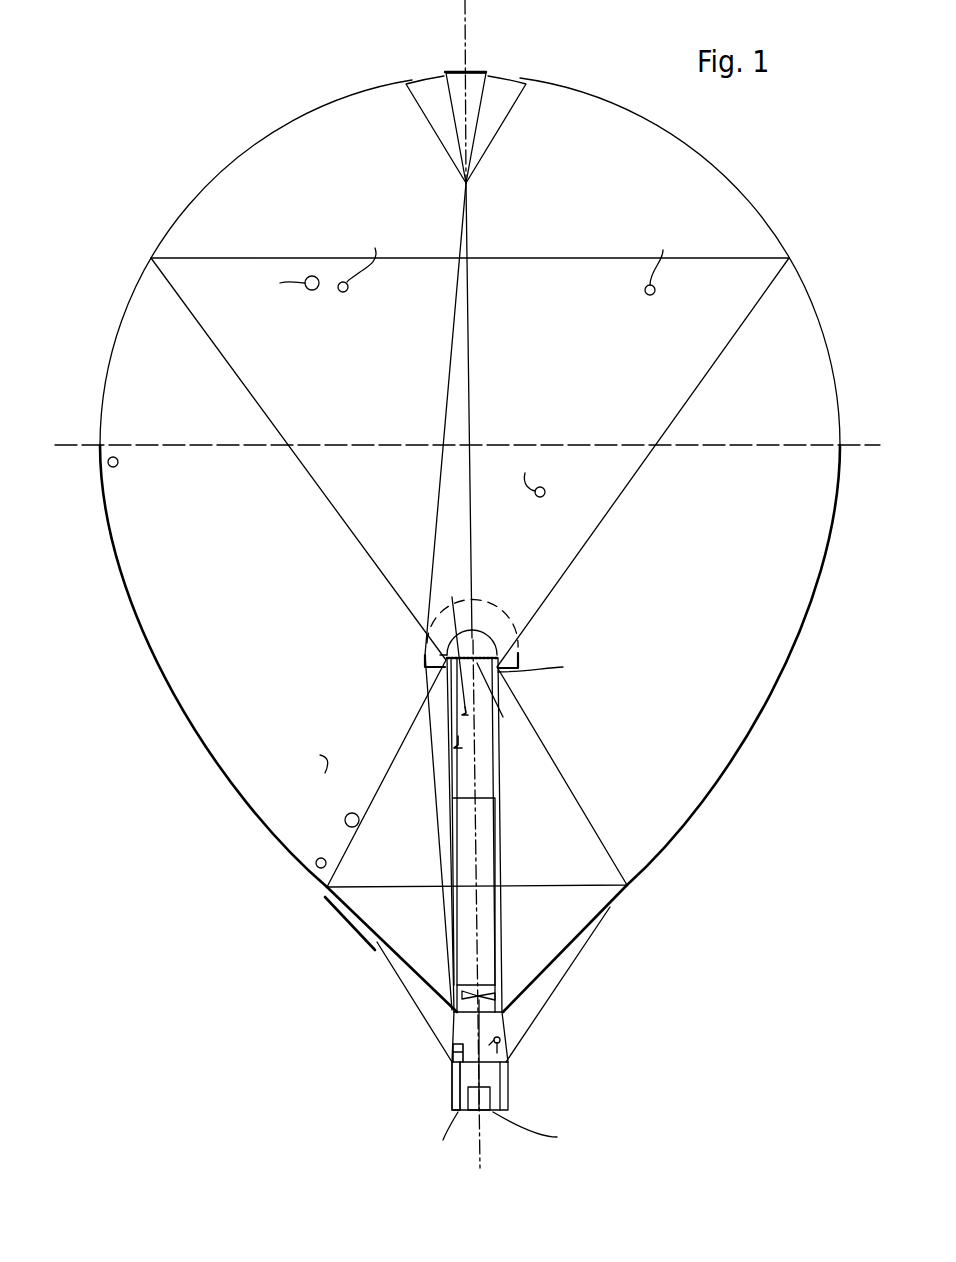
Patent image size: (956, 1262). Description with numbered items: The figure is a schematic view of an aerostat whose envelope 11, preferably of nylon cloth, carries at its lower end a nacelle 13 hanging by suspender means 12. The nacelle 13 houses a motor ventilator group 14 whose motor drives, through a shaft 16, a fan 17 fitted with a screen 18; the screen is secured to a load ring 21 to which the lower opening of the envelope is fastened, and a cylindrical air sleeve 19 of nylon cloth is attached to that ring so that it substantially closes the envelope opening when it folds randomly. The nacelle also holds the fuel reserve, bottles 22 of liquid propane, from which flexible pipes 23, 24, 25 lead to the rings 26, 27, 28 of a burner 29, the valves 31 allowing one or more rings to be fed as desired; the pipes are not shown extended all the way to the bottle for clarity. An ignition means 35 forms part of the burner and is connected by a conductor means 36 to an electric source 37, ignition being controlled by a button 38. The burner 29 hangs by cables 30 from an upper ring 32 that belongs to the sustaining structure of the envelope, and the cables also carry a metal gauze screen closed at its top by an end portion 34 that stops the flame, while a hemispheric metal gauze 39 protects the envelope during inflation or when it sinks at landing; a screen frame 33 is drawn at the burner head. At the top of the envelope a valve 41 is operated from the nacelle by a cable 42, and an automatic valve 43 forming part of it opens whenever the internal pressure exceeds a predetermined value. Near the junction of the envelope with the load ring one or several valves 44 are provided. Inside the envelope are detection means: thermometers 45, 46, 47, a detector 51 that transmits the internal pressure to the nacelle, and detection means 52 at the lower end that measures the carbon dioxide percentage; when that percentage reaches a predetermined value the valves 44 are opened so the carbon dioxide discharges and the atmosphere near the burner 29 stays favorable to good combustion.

The envelope 11 is at (772, 225).
The suspender means 12 is at (385, 970).
The nacelle 13 is at (508, 1082).
The motor ventilator group 14 is at (488, 1110).
The shaft 16 is at (452, 1082).
The fan 17 is at (497, 997).
The screen 18 is at (503, 1012).
The cylindrical air sleeve 19 is at (496, 772).
The load ring 21 is at (455, 1012).
The bottles 22 is at (455, 1105).
The flexible pipe 23 is at (453, 787).
The flexible pipe 24 is at (458, 741).
The flexible pipe 25 is at (465, 697).
The burner ring 26 is at (440, 658).
The burner ring 27 is at (457, 641).
The burner ring 28 is at (468, 650).
The burner 29 is at (503, 717).
The cables 30 is at (268, 420).
The valves 31 is at (453, 1057).
The upper ring 32 is at (583, 258).
The screen frame 33 is at (445, 668).
The end portion 34 is at (490, 643).
The ignition means 35 is at (497, 668).
The conductor means 36 is at (493, 747).
The electric source 37 is at (510, 1105).
The button 38 is at (500, 1042).
The hemispheric metal gauze 39 is at (493, 620).
The valve 41 is at (503, 78).
The cable 42 is at (460, 227).
The automatic valve 43 is at (452, 70).
The valves 44 is at (343, 920).
The thermometer 45 is at (346, 292).
The thermometer 46 is at (655, 296).
The thermometer 47 is at (543, 498).
The pressure detector 51 is at (310, 290).
The carbon dioxide detection means 52 is at (346, 815).